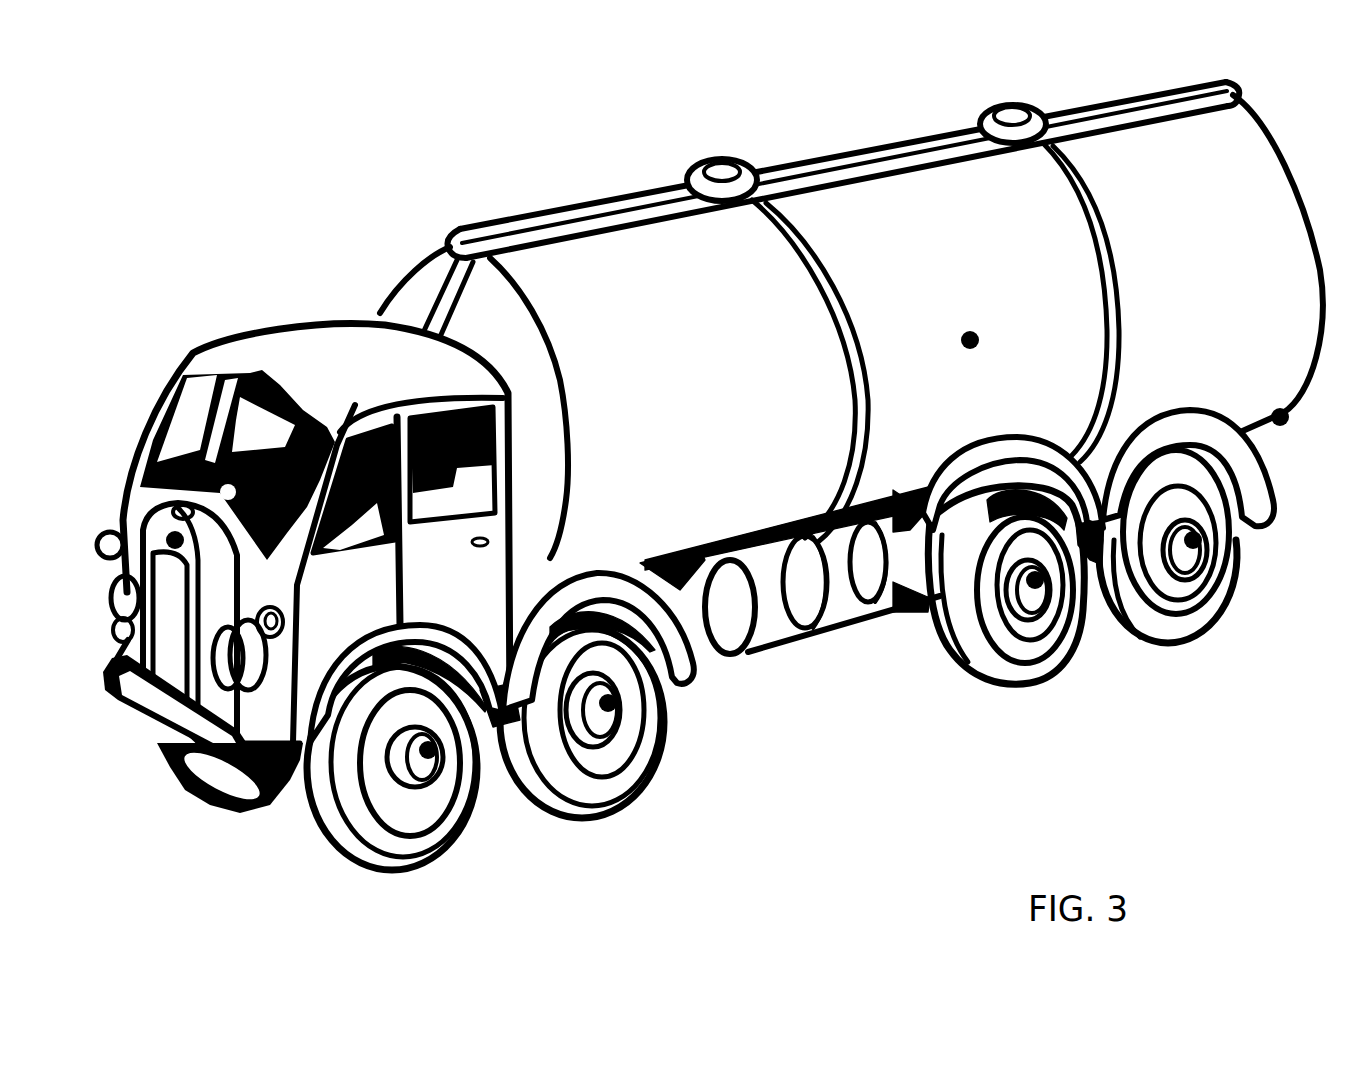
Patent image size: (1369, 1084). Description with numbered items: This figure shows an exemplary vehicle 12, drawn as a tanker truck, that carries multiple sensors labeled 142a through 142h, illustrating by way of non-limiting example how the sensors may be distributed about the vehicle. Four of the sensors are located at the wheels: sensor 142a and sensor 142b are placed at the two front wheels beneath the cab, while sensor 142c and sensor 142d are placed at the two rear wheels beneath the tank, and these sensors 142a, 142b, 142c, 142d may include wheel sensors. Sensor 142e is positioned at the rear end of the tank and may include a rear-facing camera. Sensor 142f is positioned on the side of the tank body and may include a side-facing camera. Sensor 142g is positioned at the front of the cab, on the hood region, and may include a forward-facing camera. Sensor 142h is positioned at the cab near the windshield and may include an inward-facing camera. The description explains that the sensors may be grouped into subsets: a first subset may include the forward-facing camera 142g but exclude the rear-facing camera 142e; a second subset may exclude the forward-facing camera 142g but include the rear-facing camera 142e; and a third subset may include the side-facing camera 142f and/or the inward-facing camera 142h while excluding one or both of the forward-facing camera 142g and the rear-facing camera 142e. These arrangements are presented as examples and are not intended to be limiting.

The vehicle 12 is at (572, 208).
The sensor 142a is at (433, 758).
The sensor 142b is at (612, 711).
The sensor 142c is at (1039, 588).
The sensor 142d is at (1196, 548).
The rear-facing camera 142e is at (1280, 425).
The side-facing camera 142f is at (973, 352).
The forward-facing camera 142g is at (170, 538).
The inward-facing camera 142h is at (266, 482).